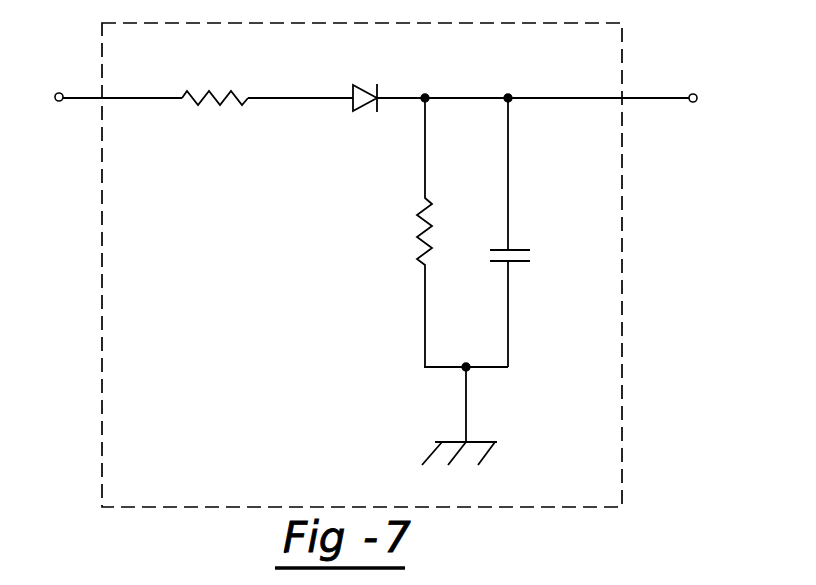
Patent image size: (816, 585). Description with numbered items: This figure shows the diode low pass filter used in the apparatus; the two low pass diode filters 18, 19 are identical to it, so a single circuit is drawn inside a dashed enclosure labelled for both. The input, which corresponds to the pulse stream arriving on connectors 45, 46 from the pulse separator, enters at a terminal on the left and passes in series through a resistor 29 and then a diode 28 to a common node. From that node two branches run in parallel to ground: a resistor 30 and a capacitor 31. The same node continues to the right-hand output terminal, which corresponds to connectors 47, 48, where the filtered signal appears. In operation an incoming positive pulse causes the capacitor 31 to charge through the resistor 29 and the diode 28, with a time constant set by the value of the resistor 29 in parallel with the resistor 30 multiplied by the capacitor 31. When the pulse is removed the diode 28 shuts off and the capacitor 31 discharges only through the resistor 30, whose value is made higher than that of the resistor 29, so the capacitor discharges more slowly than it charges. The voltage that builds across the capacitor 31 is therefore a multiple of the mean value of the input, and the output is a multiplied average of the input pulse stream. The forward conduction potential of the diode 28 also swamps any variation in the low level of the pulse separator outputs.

The low pass diode filter 18 is at (622, 478).
The low pass diode filter 19 is at (362, 265).
The diode 28 is at (359, 111).
The resistor 29 is at (212, 93).
The resistor 30 is at (426, 248).
The capacitor 31 is at (525, 256).
The connector 45 is at (103, 119).
The connector 46 is at (59, 97).
The connector 47 is at (560, 122).
The connector 48 is at (693, 98).